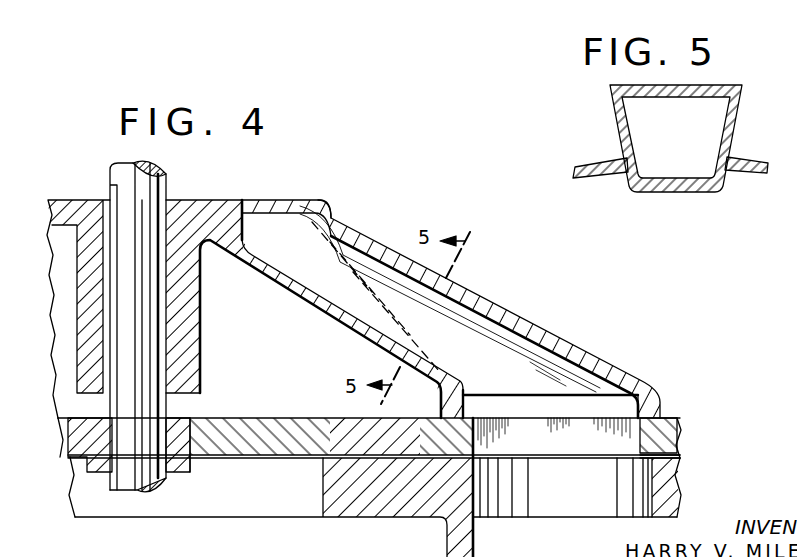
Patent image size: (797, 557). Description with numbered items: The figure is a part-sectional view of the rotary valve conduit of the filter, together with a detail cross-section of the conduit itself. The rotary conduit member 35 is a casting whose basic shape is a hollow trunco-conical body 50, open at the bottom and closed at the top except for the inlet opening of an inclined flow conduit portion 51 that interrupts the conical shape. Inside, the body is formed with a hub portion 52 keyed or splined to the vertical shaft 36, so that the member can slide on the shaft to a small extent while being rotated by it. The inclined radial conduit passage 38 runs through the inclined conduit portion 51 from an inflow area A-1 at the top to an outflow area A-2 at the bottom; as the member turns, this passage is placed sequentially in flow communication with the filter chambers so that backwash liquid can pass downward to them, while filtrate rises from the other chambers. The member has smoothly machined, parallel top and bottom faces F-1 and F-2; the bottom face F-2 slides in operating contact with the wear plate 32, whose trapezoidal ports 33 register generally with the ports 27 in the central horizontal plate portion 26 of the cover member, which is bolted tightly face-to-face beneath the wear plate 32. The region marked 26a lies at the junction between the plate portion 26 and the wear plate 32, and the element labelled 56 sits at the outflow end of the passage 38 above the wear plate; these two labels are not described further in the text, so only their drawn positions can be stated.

In FIG. 4, the central horizontal plate portion 26 is at (663, 510).
In FIG. 4, the gap between base and block 26a is at (741, 457).
In FIG. 4, the ports 27 is at (577, 498).
In FIG. 4, the wear plate 32 is at (668, 437).
In FIG. 4, the ports of trapezoidal shape 33 is at (535, 444).
In FIG. 4, the rotary valve conduit member 35 is at (331, 218).
In FIG. 4, the vertical shaft 36 is at (166, 188).
In FIG. 4, the inclined radial conduit passage 38 is at (448, 332).
In FIG. 5, the inclined radial conduit passage 38 is at (680, 137).
In FIG. 4, the hollow trunco-conical body 50 is at (427, 343).
In FIG. 4, the inclined flow conduit portion 51 is at (500, 317).
In FIG. 4, the hub portion 52 is at (196, 338).
In FIG. 4, the pad 56 is at (526, 415).
In FIG. 4, the top face F-1 is at (223, 200).
In FIG. 4, the bottom face F-2 is at (597, 418).
In FIG. 4, the inflow area A-1 is at (312, 193).
In FIG. 4, the outflow area A-2 is at (637, 388).